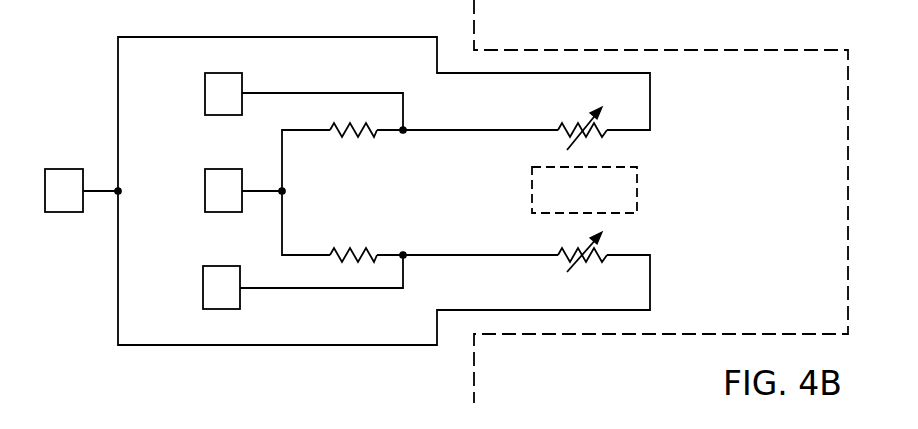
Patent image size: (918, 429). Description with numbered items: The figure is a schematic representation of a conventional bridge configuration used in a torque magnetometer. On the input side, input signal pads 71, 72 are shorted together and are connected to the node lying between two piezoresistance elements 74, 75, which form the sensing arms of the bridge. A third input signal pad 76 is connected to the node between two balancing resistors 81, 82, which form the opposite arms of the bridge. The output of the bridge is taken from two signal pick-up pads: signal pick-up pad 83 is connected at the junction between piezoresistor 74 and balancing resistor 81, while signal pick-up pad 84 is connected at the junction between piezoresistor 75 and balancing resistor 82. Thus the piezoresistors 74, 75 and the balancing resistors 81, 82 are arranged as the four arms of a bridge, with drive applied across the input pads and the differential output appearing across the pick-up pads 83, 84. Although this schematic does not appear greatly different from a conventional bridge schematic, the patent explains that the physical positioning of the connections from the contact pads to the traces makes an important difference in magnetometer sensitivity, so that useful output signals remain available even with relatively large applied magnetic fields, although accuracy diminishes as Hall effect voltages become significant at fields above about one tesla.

The input signal pad 71 is at (61, 228).
The input signal pad 72 is at (64, 213).
The piezoresistance element 74 is at (563, 263).
The piezoresistance element 75 is at (564, 121).
The input signal pad 76 is at (205, 185).
The balancing resistor 81 is at (349, 244).
The balancing resistor 82 is at (357, 140).
The signal pick-up pad 83 is at (203, 291).
The signal pick-up pad 84 is at (205, 98).